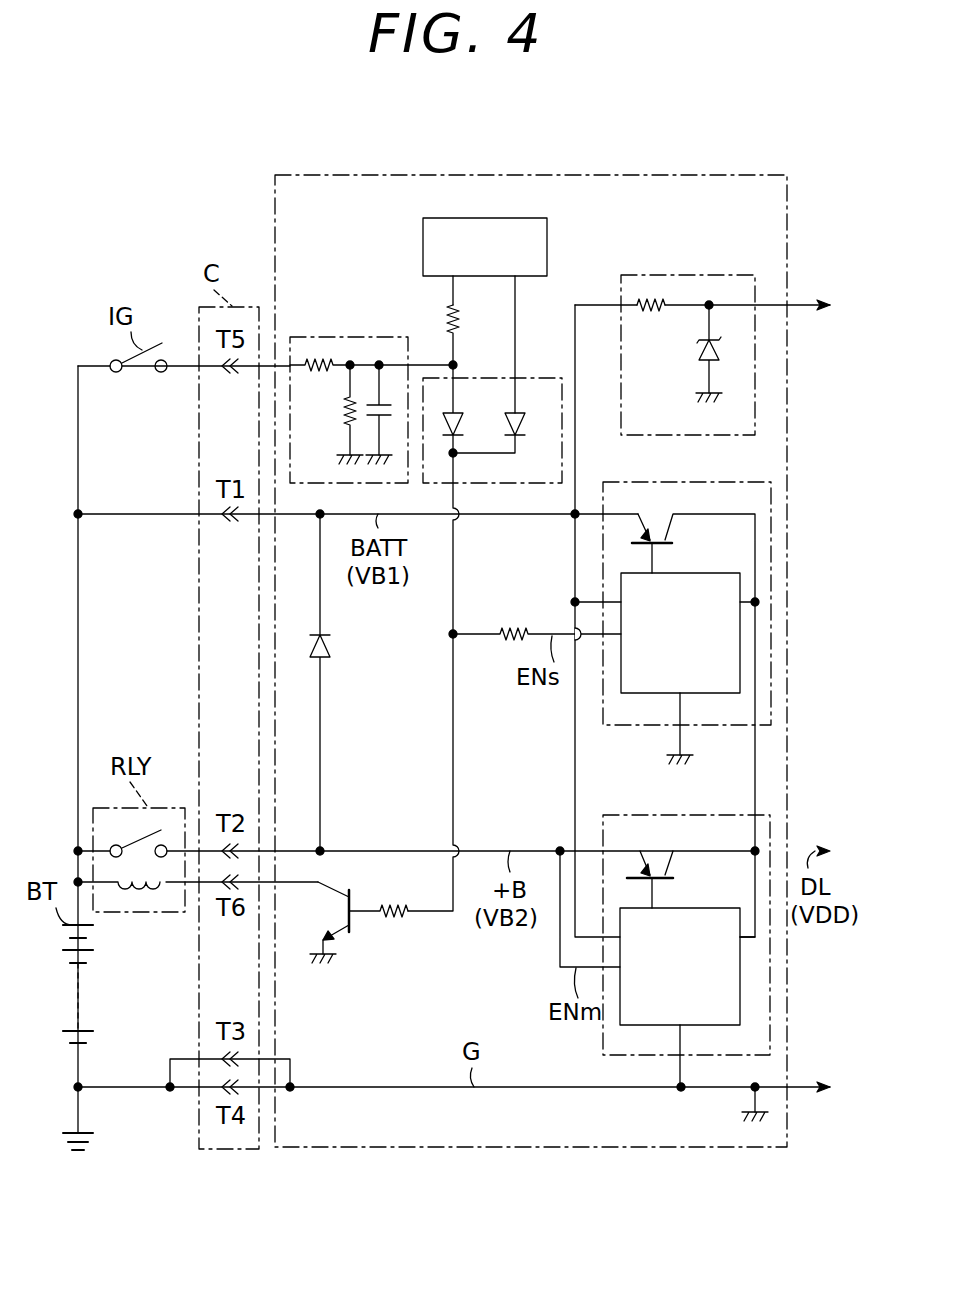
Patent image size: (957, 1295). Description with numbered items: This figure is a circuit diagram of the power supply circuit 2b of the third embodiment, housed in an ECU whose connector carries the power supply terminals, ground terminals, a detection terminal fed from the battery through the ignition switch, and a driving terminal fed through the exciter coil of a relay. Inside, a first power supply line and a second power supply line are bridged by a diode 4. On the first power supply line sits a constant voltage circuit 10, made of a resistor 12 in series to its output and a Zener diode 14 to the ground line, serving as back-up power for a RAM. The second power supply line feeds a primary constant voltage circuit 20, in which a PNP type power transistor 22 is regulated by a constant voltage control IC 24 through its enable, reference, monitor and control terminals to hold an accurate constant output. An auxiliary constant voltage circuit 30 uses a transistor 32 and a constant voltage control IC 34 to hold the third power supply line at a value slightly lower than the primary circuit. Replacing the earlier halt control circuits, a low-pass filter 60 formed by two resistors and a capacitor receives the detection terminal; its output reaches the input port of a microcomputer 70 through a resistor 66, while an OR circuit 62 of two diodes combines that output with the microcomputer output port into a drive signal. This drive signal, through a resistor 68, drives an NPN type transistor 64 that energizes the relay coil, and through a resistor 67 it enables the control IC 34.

The power supply circuit 2b is at (712, 172).
The microcomputer 70 is at (473, 218).
The resistor 66 is at (446, 322).
The low-pass filter 60 is at (352, 336).
The OR circuit 62 is at (537, 376).
The constant voltage circuit 10 is at (678, 275).
The resistor 12 is at (648, 316).
The Zener diode 14 is at (697, 350).
The diode 4 is at (332, 645).
The resistor 67 is at (517, 620).
The auxiliary constant voltage circuit 30 is at (662, 727).
The transistor 32 is at (665, 530).
The constant voltage control IC 34 is at (697, 573).
The primary constant voltage circuit 20 is at (668, 814).
The PNP type power transistor 22 is at (665, 868).
The constant voltage control IC 24 is at (697, 908).
The NPN type transistor 64 is at (352, 892).
The resistor 68 is at (398, 918).